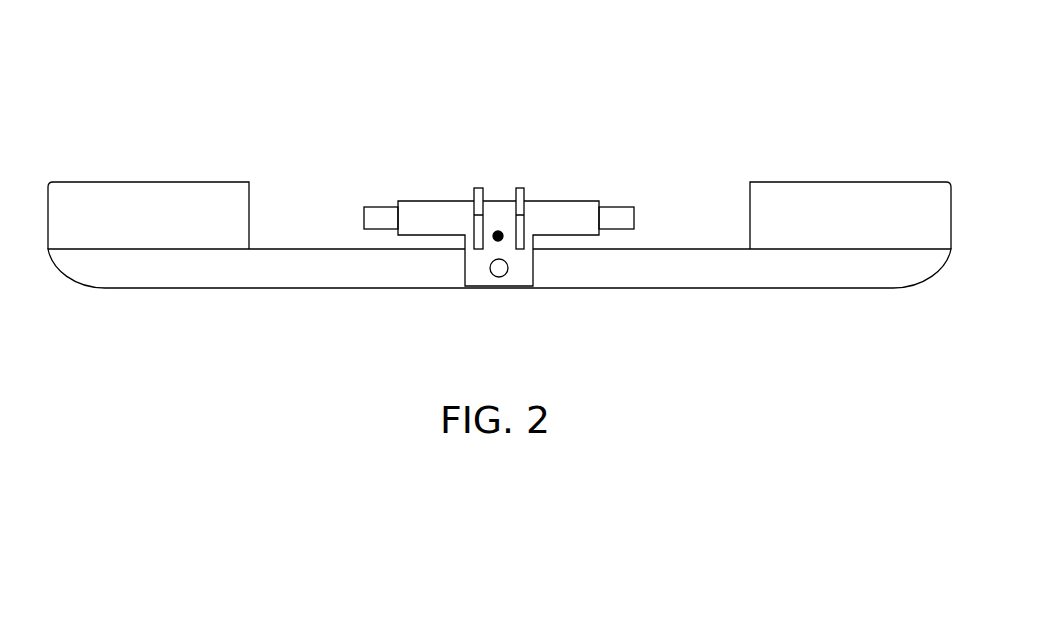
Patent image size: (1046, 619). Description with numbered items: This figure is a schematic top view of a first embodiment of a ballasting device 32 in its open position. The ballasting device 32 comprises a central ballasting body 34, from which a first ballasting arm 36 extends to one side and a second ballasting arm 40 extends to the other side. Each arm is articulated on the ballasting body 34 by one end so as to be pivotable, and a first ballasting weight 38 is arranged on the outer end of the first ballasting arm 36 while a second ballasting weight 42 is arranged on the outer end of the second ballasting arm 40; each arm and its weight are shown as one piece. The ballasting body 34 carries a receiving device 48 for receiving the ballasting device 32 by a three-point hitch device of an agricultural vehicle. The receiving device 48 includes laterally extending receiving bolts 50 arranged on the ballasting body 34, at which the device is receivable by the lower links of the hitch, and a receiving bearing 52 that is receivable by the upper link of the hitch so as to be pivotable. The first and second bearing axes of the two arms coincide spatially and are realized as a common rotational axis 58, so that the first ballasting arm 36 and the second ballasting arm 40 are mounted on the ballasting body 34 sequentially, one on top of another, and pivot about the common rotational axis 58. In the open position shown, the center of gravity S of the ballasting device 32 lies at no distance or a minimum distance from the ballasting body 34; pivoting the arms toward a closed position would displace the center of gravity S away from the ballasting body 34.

The ballasting device 32 is at (339, 59).
The ballasting body 34 is at (432, 218).
The first ballasting arm 36 is at (308, 263).
The first ballasting weight 38 is at (140, 203).
The second ballasting arm 40 is at (681, 263).
The second ballasting weight 42 is at (795, 208).
The receiving device 48 is at (487, 158).
The receiving bolts 50 is at (378, 220).
The receiving bearing 52 is at (520, 195).
The center of gravity S is at (503, 235).
The common rotational axis 58 is at (499, 270).